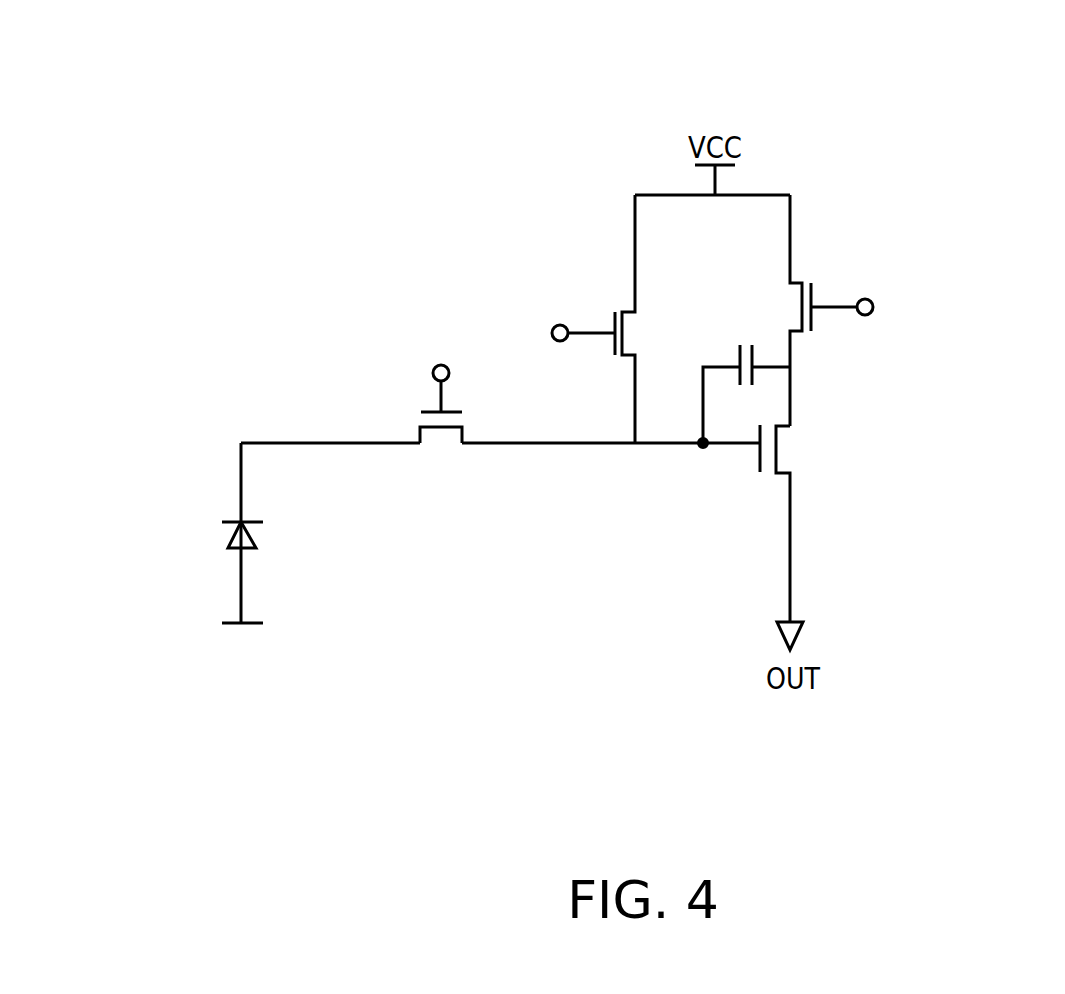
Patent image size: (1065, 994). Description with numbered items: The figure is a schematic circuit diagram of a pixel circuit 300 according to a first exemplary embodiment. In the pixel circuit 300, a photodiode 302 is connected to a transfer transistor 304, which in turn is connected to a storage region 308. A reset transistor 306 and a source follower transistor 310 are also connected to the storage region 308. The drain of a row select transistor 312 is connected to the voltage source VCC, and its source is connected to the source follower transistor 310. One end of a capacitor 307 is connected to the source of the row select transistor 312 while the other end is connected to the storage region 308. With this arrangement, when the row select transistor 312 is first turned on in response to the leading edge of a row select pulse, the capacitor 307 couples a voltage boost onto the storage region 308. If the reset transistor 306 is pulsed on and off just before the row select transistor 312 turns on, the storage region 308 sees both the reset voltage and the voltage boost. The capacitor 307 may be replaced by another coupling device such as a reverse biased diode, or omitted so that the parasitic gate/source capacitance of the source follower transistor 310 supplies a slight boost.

The pixel circuit 300 is at (956, 109).
The photodiode 302 is at (218, 510).
The transfer transistor 304 is at (415, 415).
The reset transistor 306 is at (620, 307).
The capacitor 307 is at (772, 362).
The storage region 308 is at (700, 448).
The source follower transistor 310 is at (788, 447).
The row select transistor 312 is at (808, 272).